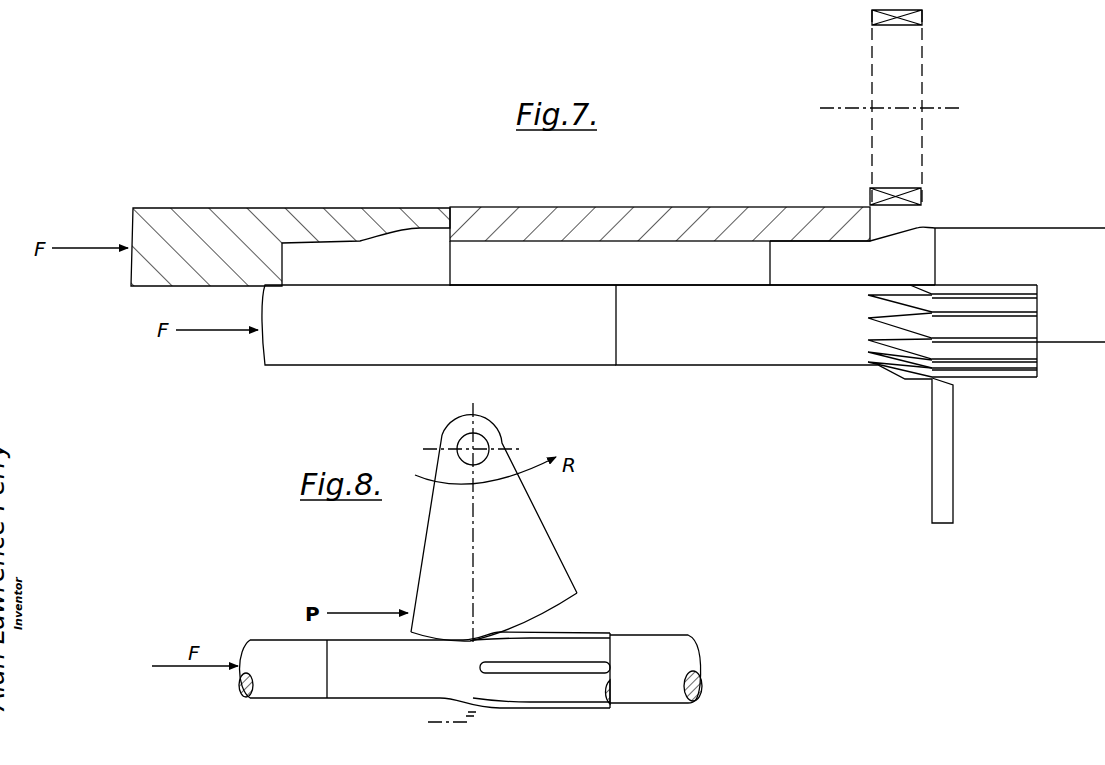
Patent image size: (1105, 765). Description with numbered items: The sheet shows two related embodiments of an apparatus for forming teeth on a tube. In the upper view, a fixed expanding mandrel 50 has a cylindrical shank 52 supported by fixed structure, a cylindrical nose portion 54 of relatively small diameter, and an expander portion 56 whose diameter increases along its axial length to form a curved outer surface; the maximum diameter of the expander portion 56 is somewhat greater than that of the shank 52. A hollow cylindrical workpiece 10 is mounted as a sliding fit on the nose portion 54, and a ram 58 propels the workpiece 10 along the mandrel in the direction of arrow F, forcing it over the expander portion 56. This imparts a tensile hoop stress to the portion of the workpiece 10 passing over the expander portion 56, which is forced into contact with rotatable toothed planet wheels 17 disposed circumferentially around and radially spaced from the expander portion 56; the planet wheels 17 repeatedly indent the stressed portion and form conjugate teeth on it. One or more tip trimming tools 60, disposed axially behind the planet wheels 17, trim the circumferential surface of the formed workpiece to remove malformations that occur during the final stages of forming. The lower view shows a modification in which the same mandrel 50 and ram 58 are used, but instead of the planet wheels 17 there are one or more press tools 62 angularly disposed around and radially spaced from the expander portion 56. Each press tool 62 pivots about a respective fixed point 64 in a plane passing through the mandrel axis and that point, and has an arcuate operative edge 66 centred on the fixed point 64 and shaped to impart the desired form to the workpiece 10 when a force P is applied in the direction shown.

In FIG. 7, the hollow cylindrical workpiece 10 is at (617, 215).
In FIG. 8, the hollow cylindrical workpiece 10 is at (360, 663).
In FIG. 7, the rotatable toothed planet wheels 17 is at (905, 48).
In FIG. 7, the fixed expanding mandrel 50 is at (970, 226).
In FIG. 8, the fixed expanding mandrel 50 is at (623, 628).
In FIG. 7, the cylindrical shank 52 is at (1080, 266).
In FIG. 8, the cylindrical shank 52 is at (677, 652).
In FIG. 7, the cylindrical nose portion 54 is at (822, 268).
In FIG. 7, the expander portion 56 is at (918, 228).
In FIG. 7, the ram 58 is at (315, 220).
In FIG. 8, the ram 58 is at (272, 678).
In FIG. 7, the tip trimming tool 60 is at (942, 418).
In FIG. 8, the press tools 62 is at (518, 508).
In FIG. 8, the fixed points 64 is at (483, 445).
In FIG. 8, the arcuate operative edge 66 is at (497, 629).